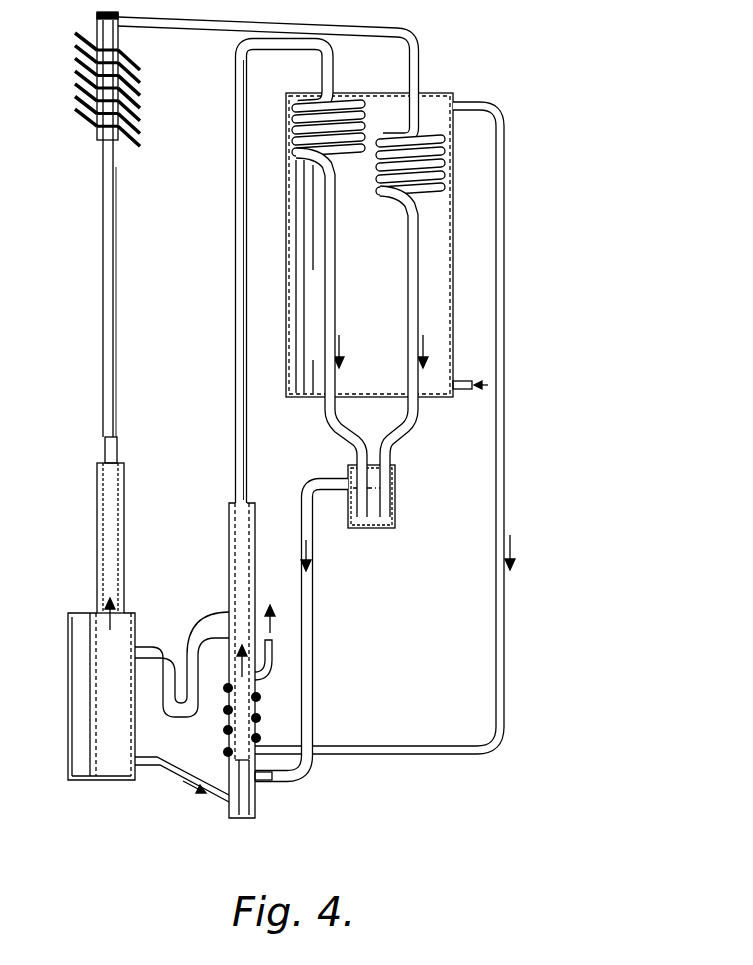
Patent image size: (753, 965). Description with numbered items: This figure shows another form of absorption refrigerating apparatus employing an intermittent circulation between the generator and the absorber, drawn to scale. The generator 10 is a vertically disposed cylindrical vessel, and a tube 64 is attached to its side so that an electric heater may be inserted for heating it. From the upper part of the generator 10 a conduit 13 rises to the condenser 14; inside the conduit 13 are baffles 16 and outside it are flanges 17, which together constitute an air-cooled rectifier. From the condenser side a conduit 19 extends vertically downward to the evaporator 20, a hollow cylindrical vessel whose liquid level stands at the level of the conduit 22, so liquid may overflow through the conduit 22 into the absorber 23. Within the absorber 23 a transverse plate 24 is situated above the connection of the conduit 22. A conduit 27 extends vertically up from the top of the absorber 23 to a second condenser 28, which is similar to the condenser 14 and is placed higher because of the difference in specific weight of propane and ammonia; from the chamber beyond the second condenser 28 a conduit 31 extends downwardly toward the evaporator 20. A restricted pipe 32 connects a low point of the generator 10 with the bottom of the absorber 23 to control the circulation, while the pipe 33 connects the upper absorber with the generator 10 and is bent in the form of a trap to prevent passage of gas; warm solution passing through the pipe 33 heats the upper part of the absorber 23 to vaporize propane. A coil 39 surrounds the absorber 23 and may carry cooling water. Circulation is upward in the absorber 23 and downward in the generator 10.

The generator 10 is at (136, 624).
The conduit 13 is at (103, 305).
The condenser 14 is at (428, 148).
The baffles 16 is at (100, 128).
The flanges 17 is at (131, 134).
The conduit 19 is at (409, 303).
The evaporator 20 is at (385, 530).
The conduit 22 is at (314, 654).
The absorber 23 is at (254, 572).
The transverse plate 24 is at (256, 787).
The conduit 27 is at (237, 305).
The second condenser 28 is at (349, 100).
The conduit 31 is at (336, 279).
The pipe 32 is at (176, 771).
The pipe 33 is at (139, 647).
The coil 39 is at (258, 698).
The tube 64 is at (67, 745).